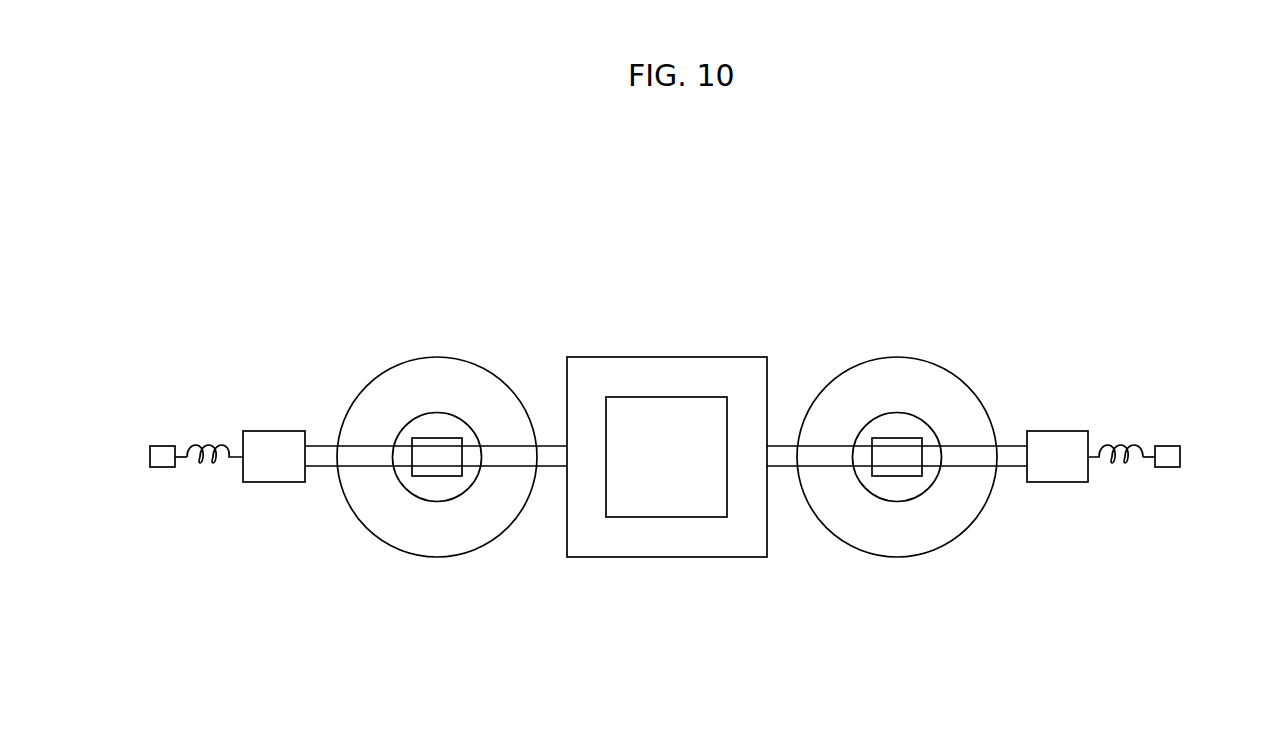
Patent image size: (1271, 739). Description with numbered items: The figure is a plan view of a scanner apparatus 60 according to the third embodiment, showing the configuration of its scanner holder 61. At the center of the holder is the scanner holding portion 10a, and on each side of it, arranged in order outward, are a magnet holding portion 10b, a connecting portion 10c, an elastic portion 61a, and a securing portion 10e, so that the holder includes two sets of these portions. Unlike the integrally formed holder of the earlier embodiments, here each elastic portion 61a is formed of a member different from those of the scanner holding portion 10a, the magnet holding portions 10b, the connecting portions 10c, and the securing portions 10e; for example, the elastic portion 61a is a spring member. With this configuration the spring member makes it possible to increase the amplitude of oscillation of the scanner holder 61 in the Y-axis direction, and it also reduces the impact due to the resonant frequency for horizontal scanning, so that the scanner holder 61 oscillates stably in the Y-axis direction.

The scanner apparatus 60 is at (1200, 350).
The scanner holder 61 is at (1211, 618).
The elastic portion 61a is at (199, 467).
The scanner holding portion 10a is at (631, 542).
The magnet holding portion 10b is at (502, 458).
The connecting portion 10c is at (277, 463).
The securing portion 10e is at (163, 458).